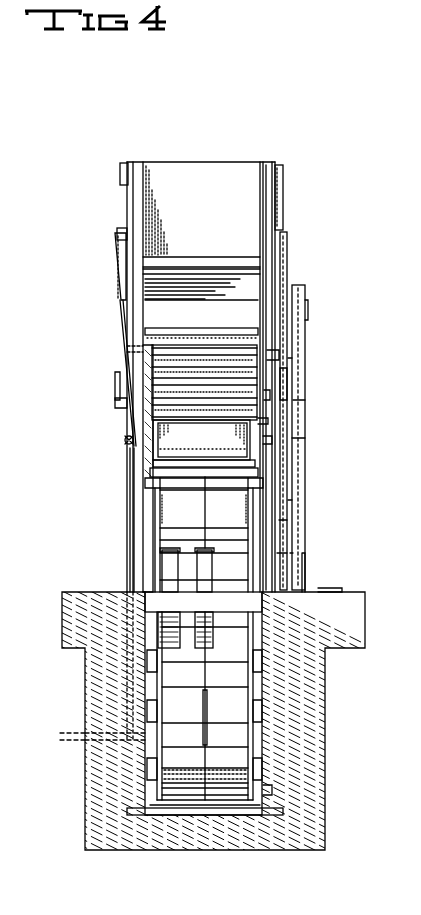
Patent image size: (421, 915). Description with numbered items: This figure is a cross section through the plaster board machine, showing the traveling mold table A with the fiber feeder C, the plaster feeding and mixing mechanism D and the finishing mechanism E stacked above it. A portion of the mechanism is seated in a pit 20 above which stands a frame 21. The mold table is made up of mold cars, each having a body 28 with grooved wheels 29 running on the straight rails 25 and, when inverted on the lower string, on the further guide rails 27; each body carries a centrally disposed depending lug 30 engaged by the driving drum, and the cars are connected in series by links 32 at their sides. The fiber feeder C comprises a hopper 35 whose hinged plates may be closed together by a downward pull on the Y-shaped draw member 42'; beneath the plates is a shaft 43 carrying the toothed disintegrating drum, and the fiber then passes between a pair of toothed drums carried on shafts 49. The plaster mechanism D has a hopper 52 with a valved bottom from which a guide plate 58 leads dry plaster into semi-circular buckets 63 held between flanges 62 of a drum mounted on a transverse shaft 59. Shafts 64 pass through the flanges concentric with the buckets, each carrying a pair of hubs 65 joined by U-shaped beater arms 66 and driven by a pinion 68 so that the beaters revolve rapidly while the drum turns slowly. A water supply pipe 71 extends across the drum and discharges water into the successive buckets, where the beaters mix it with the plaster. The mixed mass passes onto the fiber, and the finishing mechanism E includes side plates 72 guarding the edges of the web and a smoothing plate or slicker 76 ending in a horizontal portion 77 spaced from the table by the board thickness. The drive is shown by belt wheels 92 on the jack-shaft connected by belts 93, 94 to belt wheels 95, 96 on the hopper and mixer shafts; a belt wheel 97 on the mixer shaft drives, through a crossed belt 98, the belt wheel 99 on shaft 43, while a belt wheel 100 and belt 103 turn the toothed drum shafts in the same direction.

The fiber feeder C is at (245, 162).
The hopper 35 is at (133, 188).
The draw member 42' is at (298, 197).
The frame 21 is at (268, 214).
The belt wheel 99 is at (118, 243).
The belt wheel 100 is at (287, 240).
The shaft 43 is at (117, 260).
The hopper 52 is at (250, 298).
The belt 103 is at (305, 292).
The plaster feeding and mixing mechanism D is at (115, 373).
The belt wheel 95 is at (308, 303).
The guide plate 58 is at (219, 340).
The buckets 63 is at (258, 352).
The shafts 49 is at (280, 356).
The belt wheel 96 is at (293, 361).
The crossed belt 98 is at (127, 350).
The beater arms 66 is at (289, 382).
The belt wheel 97 is at (117, 373).
The shafts 64 is at (266, 397).
The hubs 65 is at (300, 406).
The shaft 59 is at (120, 396).
The flanges 62 is at (268, 421).
The pinion 68 is at (125, 441).
The grooved wheels 29 is at (268, 441).
The plate 72 is at (125, 458).
The guide rails 27 is at (258, 465).
The straight rails 25 is at (180, 442).
The finishing mechanism E is at (171, 459).
The smoothing plate 76 is at (182, 452).
The traveling mold table A is at (175, 534).
The belt 93 is at (293, 504).
The horizontal portion 77 is at (190, 468).
The water supply pipe 71 is at (165, 470).
The belt 94 is at (287, 523).
The body 28 is at (250, 548).
The belt wheels 92 is at (306, 573).
The links 32 is at (268, 685).
The pit 20 is at (268, 714).
The lug 30 is at (204, 735).